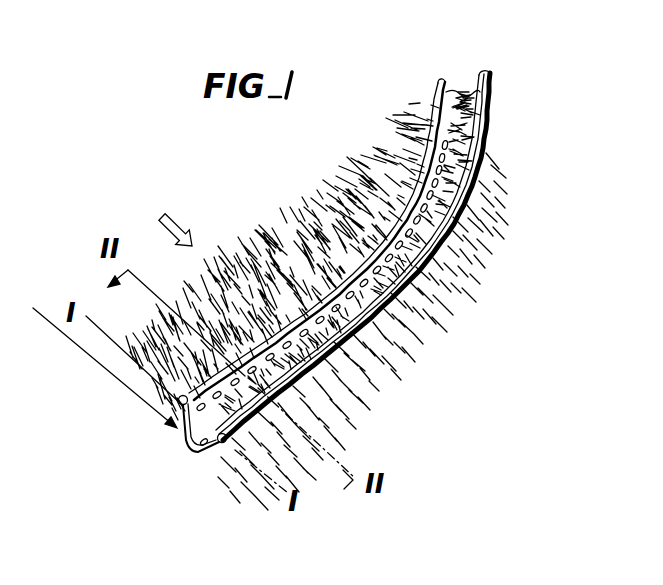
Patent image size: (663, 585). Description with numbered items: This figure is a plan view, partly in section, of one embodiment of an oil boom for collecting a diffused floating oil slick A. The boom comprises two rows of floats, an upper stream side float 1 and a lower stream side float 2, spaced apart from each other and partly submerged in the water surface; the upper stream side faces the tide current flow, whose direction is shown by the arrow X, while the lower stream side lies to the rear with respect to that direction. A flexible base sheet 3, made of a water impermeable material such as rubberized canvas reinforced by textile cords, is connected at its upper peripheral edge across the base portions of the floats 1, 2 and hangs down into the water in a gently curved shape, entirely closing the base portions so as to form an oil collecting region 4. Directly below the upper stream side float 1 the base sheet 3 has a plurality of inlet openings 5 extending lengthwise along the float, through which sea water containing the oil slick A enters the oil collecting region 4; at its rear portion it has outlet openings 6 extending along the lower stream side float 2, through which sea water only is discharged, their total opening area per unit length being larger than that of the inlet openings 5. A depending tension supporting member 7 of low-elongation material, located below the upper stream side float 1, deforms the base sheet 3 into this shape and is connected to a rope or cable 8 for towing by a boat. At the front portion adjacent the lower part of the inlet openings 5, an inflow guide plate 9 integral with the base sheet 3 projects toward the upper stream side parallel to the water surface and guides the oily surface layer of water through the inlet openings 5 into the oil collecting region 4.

The upper stream side float 1 is at (303, 270).
The lower stream side float 2 is at (396, 302).
The flexible base sheet 3 is at (188, 441).
The oil collecting region 4 is at (337, 320).
The inlet openings 5 is at (333, 308).
The outlet openings 6 is at (220, 445).
The tension supporting member 7 is at (172, 416).
The rope or cable 8 is at (58, 328).
The inflow guide plate 9 is at (178, 403).
The floating oil slick A is at (342, 193).
The direction of tide current flow X is at (188, 230).